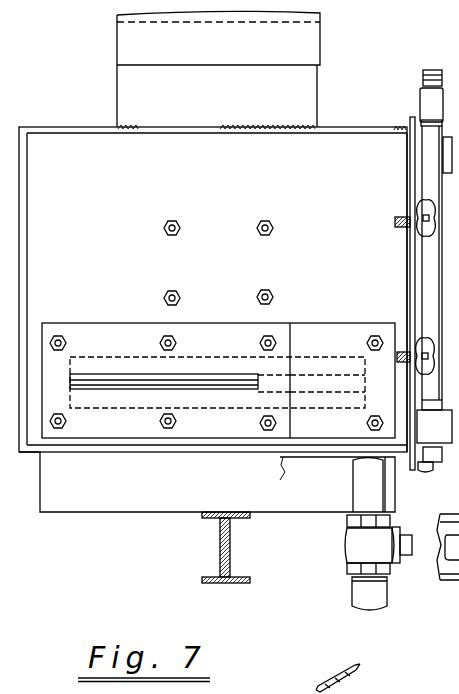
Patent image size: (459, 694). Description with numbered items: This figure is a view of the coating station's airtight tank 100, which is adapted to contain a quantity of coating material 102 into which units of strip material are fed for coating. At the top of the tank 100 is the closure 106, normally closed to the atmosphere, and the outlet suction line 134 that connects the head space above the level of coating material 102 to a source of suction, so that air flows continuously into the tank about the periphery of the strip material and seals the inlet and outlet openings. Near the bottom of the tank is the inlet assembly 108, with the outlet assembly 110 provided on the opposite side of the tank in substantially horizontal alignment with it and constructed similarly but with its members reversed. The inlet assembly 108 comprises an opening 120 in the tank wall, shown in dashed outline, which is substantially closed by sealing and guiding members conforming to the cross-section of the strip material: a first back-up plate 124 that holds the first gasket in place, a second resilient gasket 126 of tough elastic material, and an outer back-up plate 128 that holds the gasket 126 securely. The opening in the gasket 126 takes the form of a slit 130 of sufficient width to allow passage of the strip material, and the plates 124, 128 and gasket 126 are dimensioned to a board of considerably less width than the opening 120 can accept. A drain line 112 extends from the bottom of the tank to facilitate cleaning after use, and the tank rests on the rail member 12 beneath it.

The outlet suction line 134 is at (117, 18).
The airtight tank 100 is at (356, 124).
The closure 106 is at (425, 80).
The outlet assembly 110 is at (410, 309).
The coating material 102 is at (458, 440).
The outer back-up plate 128 is at (86, 336).
The second resilient member or gasket 126 is at (127, 386).
The first back-up plate 124 is at (317, 333).
The opening 120 is at (317, 365).
The slit 130 is at (204, 378).
The inlet assembly 108 is at (135, 443).
The rail 12 is at (220, 546).
The drain line 112 is at (380, 596).